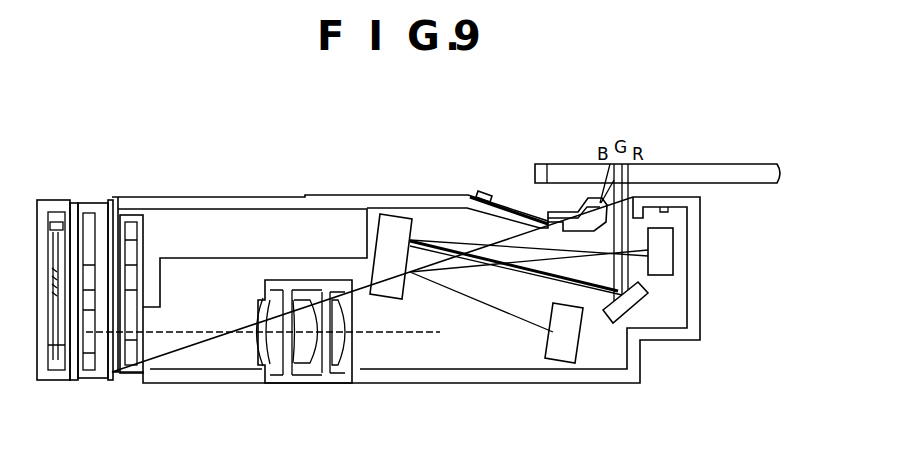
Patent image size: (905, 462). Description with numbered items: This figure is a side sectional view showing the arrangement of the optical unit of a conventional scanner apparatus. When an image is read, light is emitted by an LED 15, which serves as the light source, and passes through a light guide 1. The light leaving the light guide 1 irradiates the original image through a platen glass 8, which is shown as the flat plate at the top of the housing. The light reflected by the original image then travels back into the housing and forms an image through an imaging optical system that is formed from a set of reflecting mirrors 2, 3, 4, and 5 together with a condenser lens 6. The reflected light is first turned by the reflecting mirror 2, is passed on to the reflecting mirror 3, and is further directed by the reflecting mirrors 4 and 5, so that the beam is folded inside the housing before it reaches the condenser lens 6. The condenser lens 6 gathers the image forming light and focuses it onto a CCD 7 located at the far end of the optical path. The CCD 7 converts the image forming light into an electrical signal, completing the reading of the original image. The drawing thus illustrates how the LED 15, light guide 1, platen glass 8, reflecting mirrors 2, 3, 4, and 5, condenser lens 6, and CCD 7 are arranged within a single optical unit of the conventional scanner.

The light guide 1 is at (550, 203).
The reflecting mirror 2 is at (628, 303).
The reflecting mirror 3 is at (395, 229).
The reflecting mirror 4 is at (662, 250).
The reflecting mirror 5 is at (562, 350).
The condenser lens 6 is at (300, 347).
The CCD 7 is at (87, 340).
The platen glass 8 is at (565, 173).
The LED 15 is at (487, 192).